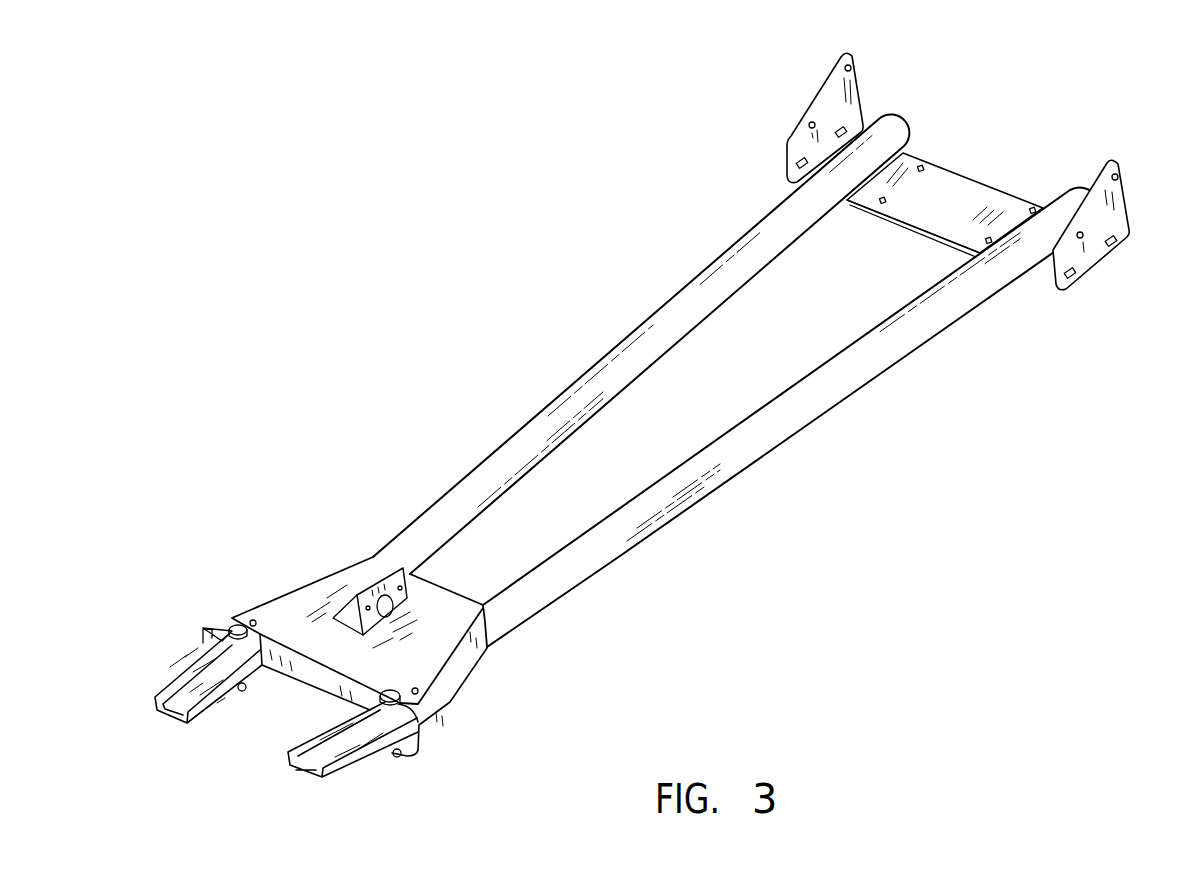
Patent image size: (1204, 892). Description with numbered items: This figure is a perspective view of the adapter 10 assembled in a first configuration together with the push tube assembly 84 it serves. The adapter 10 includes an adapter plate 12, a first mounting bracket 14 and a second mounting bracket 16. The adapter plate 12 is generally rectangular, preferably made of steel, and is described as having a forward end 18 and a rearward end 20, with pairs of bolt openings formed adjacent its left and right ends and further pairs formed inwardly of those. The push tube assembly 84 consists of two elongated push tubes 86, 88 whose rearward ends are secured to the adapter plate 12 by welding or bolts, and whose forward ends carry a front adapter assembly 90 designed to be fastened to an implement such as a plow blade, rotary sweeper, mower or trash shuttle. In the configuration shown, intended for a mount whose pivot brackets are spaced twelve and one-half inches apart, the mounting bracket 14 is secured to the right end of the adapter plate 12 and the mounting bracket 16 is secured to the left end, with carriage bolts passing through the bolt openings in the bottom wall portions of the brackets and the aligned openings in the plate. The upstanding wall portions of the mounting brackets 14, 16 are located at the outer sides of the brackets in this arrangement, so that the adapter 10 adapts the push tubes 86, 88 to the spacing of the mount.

The adapter 10 is at (958, 108).
The adapter plate 12 is at (967, 163).
The first mounting bracket 14 is at (813, 102).
The second mounting bracket 16 is at (1130, 180).
The forward end 18 is at (905, 227).
The rearward end 20 is at (1013, 197).
The push tube assembly 84 is at (540, 400).
The push tube 86 is at (710, 263).
The push tube 88 is at (820, 372).
The front adapter assembly 90 is at (307, 575).